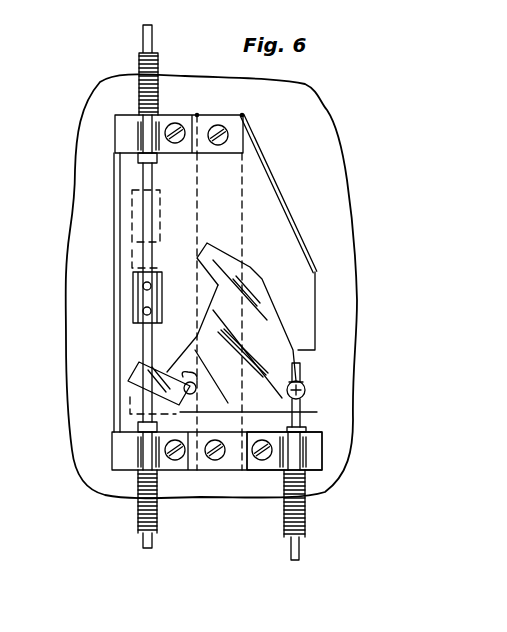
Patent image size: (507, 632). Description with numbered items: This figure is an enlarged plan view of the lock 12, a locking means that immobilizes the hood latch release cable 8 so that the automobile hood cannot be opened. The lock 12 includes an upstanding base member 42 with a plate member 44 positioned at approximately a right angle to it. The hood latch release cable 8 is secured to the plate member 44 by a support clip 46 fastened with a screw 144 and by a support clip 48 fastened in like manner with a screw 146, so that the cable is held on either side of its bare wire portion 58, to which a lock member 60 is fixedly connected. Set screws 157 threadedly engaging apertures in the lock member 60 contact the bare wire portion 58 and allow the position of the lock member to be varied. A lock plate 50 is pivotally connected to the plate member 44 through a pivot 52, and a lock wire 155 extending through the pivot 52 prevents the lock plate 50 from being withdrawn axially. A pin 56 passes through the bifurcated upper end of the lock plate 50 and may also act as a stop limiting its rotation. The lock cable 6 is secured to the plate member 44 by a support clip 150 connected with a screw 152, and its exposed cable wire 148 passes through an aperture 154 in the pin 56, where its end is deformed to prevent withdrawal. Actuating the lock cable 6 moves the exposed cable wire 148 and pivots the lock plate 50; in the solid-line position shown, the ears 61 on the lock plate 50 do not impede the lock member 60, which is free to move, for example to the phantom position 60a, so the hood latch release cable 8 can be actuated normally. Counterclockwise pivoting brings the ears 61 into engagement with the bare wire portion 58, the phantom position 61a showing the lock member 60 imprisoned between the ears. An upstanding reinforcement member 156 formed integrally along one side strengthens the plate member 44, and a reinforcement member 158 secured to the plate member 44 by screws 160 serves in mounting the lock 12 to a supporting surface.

The lock cable 6 is at (305, 518).
The hood latch release cable 8 is at (152, 77).
The lock 12 is at (100, 348).
The base member 42 is at (118, 173).
The plate member 44 is at (300, 255).
The support clip 46 is at (137, 128).
The support clip 48 is at (128, 472).
The lock plate 50 is at (264, 308).
The pivot 52 is at (196, 382).
The pin 56 is at (286, 384).
The bare wire portion 58 is at (145, 33).
The lock member 60 is at (137, 302).
The lock member phantom position 60a is at (133, 228).
The ears 61 is at (226, 248).
The ears phantom position 61a is at (172, 250).
The screw 144 is at (170, 115).
The screw 146 is at (176, 460).
The exposed cable wire 148 is at (300, 412).
The support clip 150 is at (270, 470).
The screw 152 is at (282, 408).
The aperture 154 is at (316, 372).
The lock wire 155 is at (140, 405).
The reinforcement member 156 is at (250, 134).
The set screws 157 is at (135, 298).
The reinforcement member 158 is at (244, 198).
The screws 160 is at (212, 120).